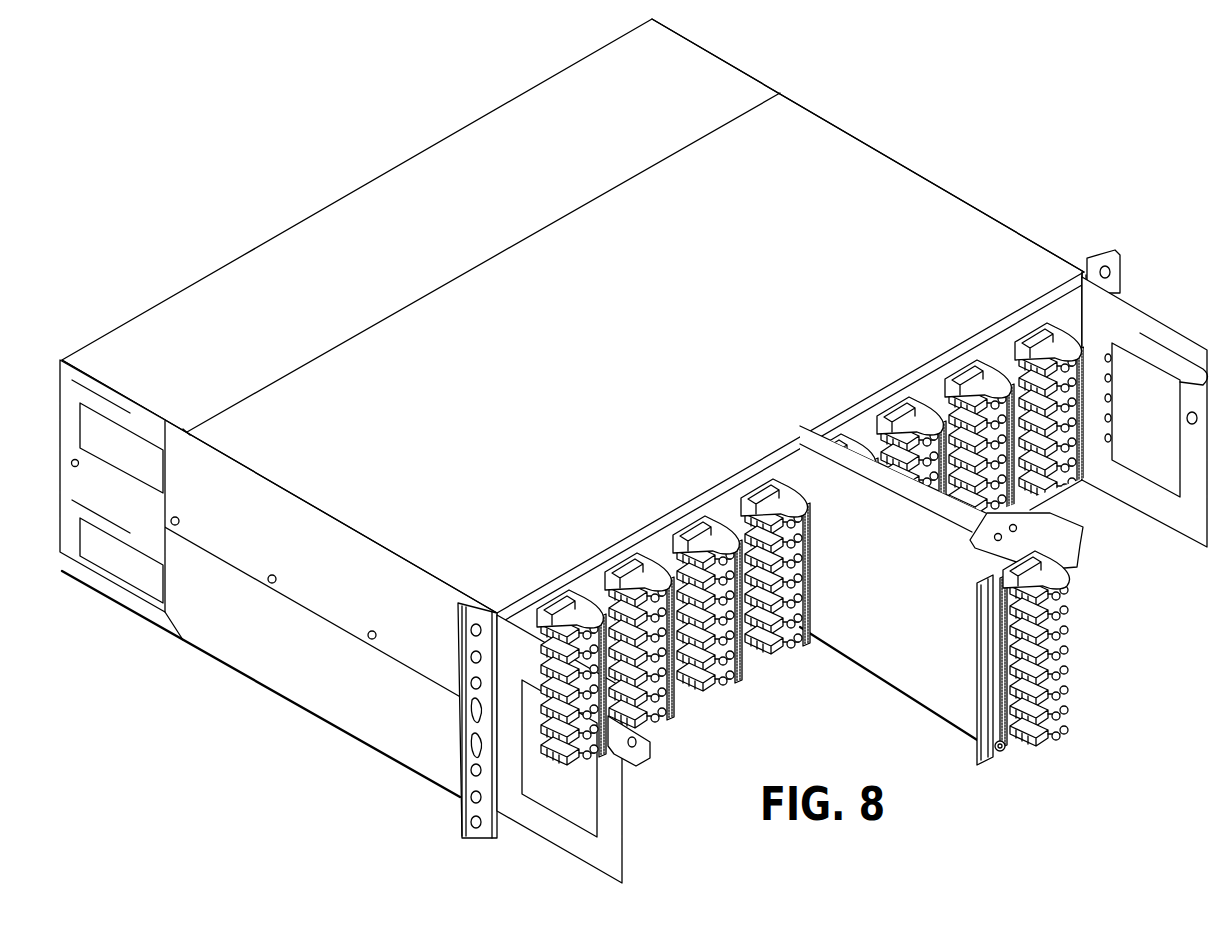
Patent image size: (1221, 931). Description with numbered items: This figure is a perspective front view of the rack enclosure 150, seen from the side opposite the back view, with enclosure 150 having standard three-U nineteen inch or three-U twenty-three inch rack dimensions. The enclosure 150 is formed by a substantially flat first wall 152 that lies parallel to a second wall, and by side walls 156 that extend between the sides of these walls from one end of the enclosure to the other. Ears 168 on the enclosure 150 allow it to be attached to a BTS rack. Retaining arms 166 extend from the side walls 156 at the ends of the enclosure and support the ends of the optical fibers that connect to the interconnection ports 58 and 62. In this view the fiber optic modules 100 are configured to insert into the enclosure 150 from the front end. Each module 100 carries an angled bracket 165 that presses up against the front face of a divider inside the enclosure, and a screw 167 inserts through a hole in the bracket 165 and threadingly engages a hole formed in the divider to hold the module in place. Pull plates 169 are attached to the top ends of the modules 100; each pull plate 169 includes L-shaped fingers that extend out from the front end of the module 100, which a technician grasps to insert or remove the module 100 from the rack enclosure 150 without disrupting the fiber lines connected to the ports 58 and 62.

The interconnection ports 58 is at (623, 577).
The interconnection ports 62 is at (645, 737).
The module 100 is at (890, 687).
The enclosure 150 is at (1026, 253).
The first wall 152 is at (823, 140).
The side walls 156 is at (952, 188).
The angled bracket 165 is at (995, 648).
The retaining arms 166 is at (122, 606).
The screw 167 is at (1000, 753).
The ears 168 is at (456, 826).
The pull plate 169 is at (778, 470).